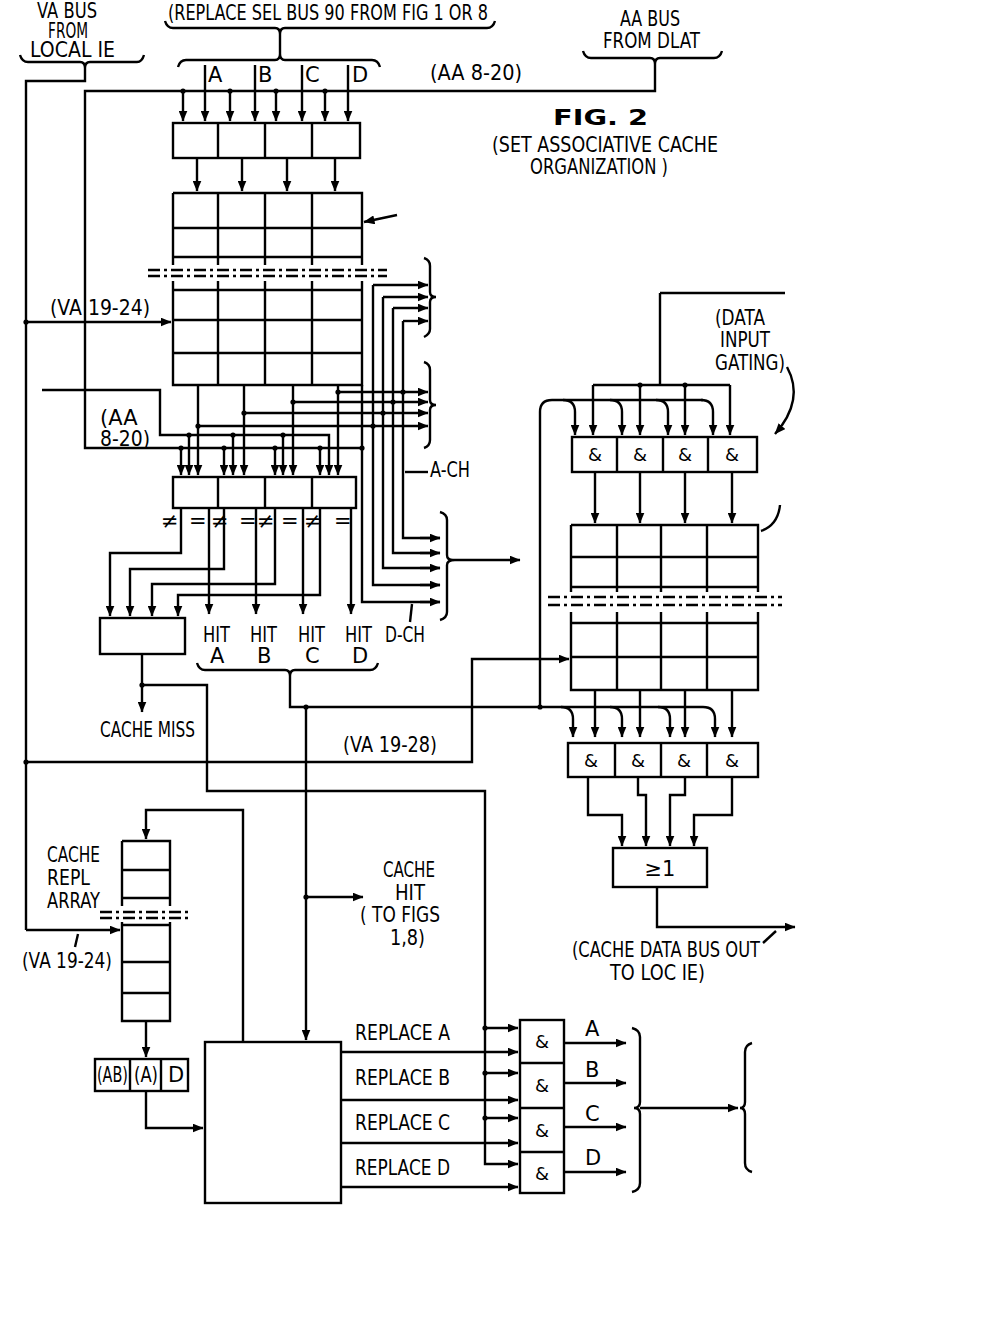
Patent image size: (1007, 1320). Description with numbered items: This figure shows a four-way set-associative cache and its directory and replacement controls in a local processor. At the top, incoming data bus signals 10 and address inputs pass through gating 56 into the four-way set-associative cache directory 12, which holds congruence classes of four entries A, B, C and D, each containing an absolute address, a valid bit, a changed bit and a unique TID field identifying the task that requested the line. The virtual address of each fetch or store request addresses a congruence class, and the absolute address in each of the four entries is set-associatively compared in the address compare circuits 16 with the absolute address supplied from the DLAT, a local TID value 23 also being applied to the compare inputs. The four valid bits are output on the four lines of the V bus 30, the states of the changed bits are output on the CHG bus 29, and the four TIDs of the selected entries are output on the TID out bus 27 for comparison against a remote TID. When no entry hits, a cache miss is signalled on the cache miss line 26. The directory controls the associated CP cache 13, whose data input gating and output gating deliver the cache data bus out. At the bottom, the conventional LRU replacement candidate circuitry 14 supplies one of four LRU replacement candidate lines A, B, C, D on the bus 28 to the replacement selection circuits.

The replace select AND gates 56 is at (360, 146).
The cache directory 12 is at (171, 220).
The local IE data bus out 10 is at (660, 310).
The V bus 30 is at (434, 297).
The CHG bus 29 is at (355, 405).
The local TID line 23 is at (60, 392).
The compare circuits 16 is at (173, 500).
The TID out bus 27 is at (486, 563).
The CP cache 13 is at (761, 578).
The cache miss line 26 is at (142, 700).
The LRU replacement candidate circuitry (LRCC) 14 is at (205, 1152).
The bus 28 is at (735, 1104).